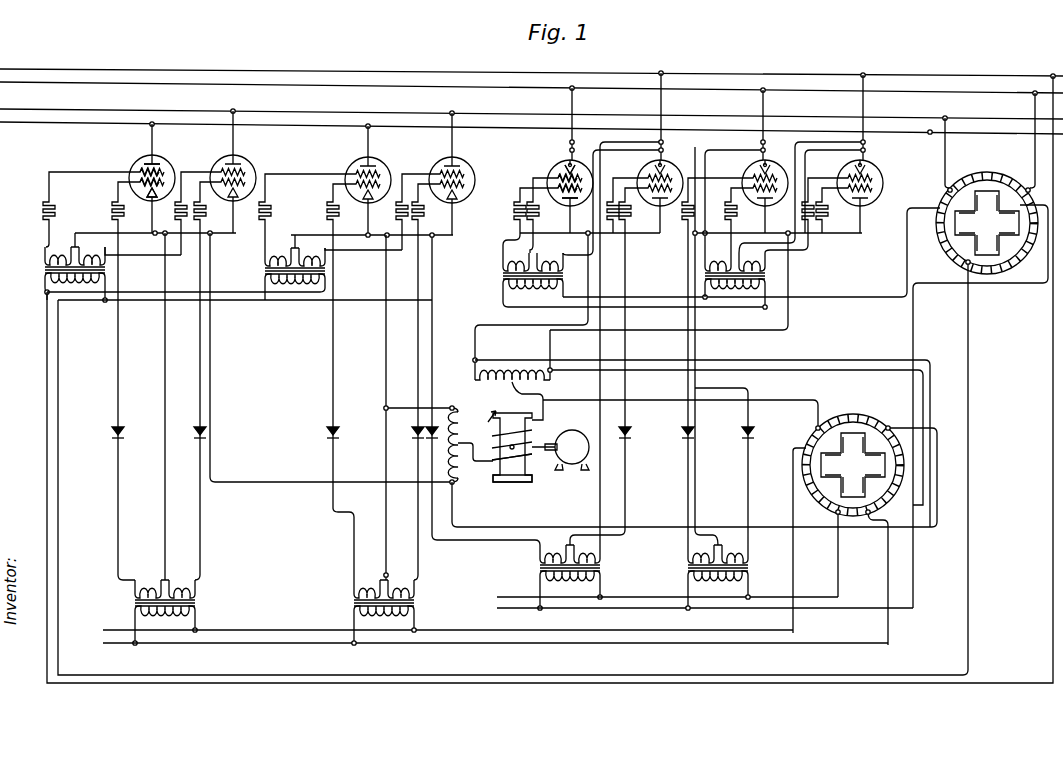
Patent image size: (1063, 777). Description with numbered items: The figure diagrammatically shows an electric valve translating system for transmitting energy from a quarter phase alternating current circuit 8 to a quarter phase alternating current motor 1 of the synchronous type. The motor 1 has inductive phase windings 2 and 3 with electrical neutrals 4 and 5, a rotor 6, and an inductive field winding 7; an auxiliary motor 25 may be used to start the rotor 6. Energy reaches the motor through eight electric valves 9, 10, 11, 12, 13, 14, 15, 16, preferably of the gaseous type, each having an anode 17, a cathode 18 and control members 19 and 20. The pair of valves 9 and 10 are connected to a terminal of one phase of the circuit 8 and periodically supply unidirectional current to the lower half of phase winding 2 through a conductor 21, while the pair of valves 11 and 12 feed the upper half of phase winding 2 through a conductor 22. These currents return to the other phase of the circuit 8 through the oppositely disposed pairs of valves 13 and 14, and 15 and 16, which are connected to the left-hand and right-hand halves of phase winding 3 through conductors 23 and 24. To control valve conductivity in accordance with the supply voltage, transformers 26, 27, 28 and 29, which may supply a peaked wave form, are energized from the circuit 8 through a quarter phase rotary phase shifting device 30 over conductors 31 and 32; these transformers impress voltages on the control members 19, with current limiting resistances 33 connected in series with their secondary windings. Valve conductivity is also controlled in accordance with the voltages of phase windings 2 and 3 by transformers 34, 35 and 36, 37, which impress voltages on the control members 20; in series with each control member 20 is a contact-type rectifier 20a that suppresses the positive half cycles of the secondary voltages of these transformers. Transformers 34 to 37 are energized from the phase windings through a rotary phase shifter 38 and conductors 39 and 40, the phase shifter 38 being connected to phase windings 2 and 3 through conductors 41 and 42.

The quarter phase alternating current motor 1 is at (505, 446).
The inductive phase winding 2 is at (450, 408).
The inductive phase winding 3 is at (512, 379).
The electrical neutral 4 is at (472, 464).
The electrical neutral 5 is at (512, 391).
The rotor 6 is at (514, 481).
The inductive field winding 7 is at (531, 459).
The quarter phase alternating current circuit 8 is at (110, 75).
The electric valve 9 is at (159, 168).
The electric valve 10 is at (243, 165).
The electric valve 11 is at (373, 165).
The electric valve 12 is at (456, 164).
The electric valve 13 is at (574, 163).
The electric valve 14 is at (665, 163).
The electric valve 15 is at (771, 163).
The electric valve 16 is at (870, 168).
The anode 17 is at (145, 163).
The cathode 18 is at (150, 200).
The control member 19 is at (163, 170).
The control member 20 is at (134, 182).
The rectifier 20a is at (116, 431).
The conductor 21 is at (265, 482).
The conductor 22 is at (384, 359).
The conductor 23 is at (498, 324).
The conductor 24 is at (551, 344).
The motor 25 is at (577, 432).
The transformer 26 is at (45, 269).
The transformer 27 is at (265, 271).
The transformer 28 is at (562, 275).
The transformer 29 is at (767, 275).
The quarter phase rotary phase shifting device 30 is at (997, 162).
The conductors 31 is at (338, 681).
The conductors 32 is at (854, 306).
The current limiting resistance 33 is at (50, 210).
The transformer 34 is at (199, 605).
The transformer 35 is at (417, 605).
The transformer 36 is at (535, 568).
The transformer 37 is at (683, 568).
The rotary phase shifter 38 is at (863, 407).
The conductors 39 is at (526, 643).
The conductors 40 is at (813, 598).
The conductors 41 is at (788, 403).
The conductors 42 is at (897, 363).